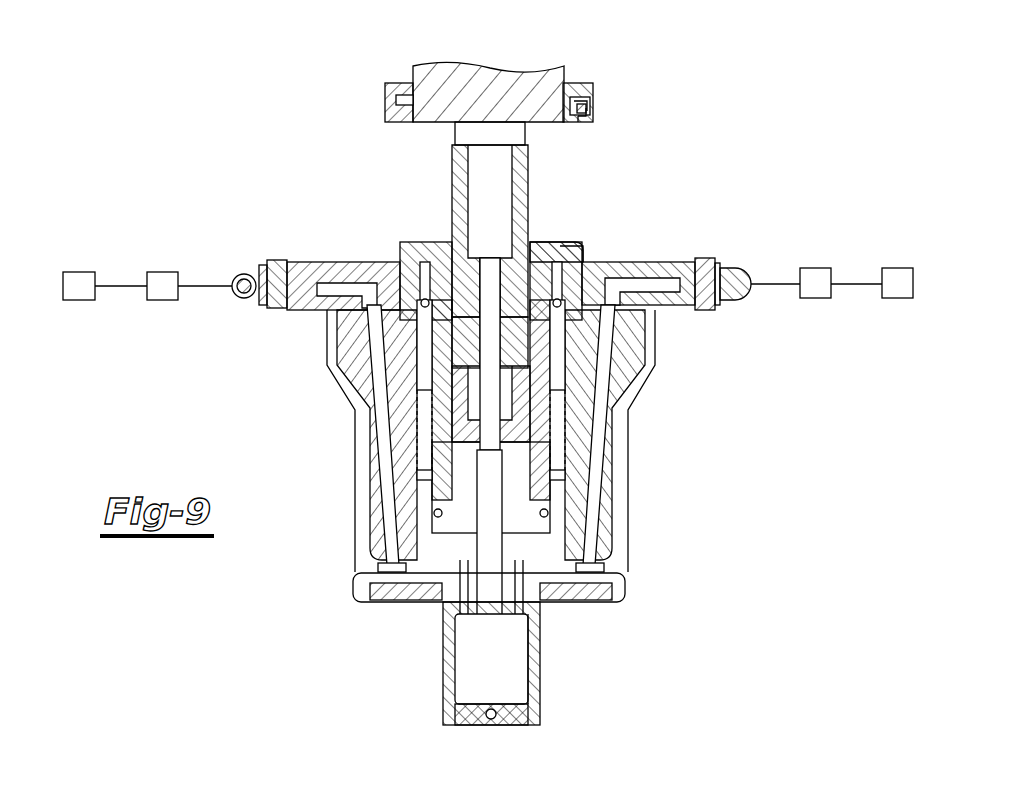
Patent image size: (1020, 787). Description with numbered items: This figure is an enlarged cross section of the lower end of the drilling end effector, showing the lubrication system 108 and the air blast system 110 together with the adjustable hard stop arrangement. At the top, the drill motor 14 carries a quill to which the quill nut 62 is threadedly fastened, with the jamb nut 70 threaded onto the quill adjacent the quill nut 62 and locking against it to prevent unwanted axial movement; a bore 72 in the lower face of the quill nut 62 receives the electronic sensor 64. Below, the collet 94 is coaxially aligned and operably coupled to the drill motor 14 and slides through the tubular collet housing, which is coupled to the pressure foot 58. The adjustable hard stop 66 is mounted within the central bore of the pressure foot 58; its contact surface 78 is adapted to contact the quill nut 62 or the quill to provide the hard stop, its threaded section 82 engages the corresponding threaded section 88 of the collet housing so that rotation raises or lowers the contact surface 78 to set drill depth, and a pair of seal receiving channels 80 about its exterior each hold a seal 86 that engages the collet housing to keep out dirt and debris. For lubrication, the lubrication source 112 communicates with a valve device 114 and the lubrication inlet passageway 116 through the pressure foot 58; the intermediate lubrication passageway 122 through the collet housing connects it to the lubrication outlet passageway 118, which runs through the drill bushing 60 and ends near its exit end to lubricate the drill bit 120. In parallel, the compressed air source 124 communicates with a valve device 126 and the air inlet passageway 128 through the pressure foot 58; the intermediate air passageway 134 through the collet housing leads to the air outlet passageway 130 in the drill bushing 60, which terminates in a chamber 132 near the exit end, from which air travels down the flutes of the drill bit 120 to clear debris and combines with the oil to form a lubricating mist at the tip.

The drill motor 14 is at (503, 73).
The pressure foot 58 is at (373, 262).
The drill bushing 60 is at (586, 721).
The quill nut 62 is at (597, 112).
The electronic sensor 64 is at (576, 125).
The adjustable hard stop 66 is at (584, 257).
The jamb nut 70 is at (587, 84).
The bore 72 is at (584, 122).
The contact surface 78 is at (575, 243).
The seal receiving channels 80 is at (561, 304).
The threaded section 82 is at (425, 432).
The seal 86 is at (422, 304).
The threaded section 88 is at (447, 455).
The collet 94 is at (452, 178).
The lubrication system 108 is at (760, 243).
The air blast system 110 is at (247, 236).
The lubrication source 112 is at (893, 268).
The valve device 114 is at (813, 268).
The lubrication inlet passageway 116 is at (652, 268).
The lubrication outlet passageway 118 is at (530, 640).
The drill bit 120 is at (463, 620).
The intermediate lubrication passageway 122 is at (602, 428).
The compressed air source 124 is at (80, 272).
The valve device 126 is at (163, 272).
The air inlet passageway 128 is at (345, 283).
The air outlet passageway 130 is at (442, 607).
The chamber 132 is at (470, 662).
The intermediate air passageway 134 is at (378, 373).